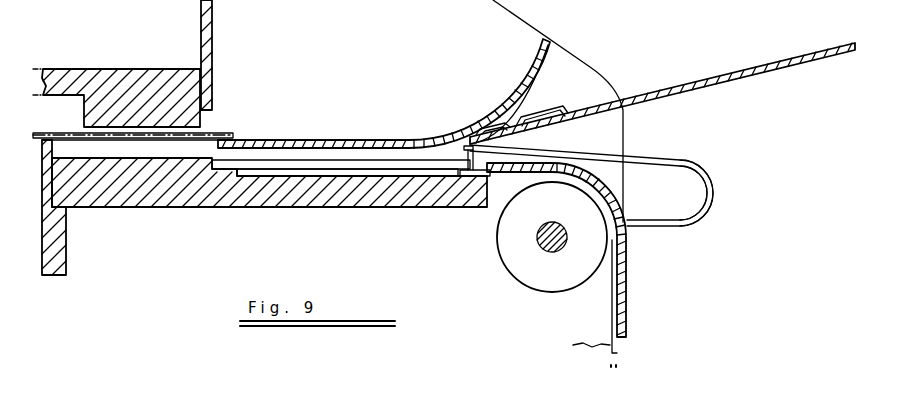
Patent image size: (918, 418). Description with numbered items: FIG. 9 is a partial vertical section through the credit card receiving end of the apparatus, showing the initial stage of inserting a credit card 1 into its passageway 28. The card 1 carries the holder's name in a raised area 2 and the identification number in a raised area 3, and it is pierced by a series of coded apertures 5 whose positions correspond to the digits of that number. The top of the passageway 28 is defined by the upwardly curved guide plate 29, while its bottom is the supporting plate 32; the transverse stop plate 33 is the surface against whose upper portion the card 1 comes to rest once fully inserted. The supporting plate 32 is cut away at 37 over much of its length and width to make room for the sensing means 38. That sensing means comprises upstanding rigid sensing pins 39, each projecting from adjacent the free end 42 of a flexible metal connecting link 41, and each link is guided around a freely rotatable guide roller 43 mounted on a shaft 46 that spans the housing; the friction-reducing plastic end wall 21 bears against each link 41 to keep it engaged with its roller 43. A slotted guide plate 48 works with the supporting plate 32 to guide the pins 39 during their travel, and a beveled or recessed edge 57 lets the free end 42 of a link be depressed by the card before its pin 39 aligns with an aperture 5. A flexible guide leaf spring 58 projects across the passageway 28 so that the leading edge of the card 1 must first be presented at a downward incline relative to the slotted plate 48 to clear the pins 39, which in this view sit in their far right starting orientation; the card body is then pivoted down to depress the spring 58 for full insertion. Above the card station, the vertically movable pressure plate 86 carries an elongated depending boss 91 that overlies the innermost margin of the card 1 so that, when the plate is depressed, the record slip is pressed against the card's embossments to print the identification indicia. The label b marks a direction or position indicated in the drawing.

The credit card 1 is at (743, 63).
The card holder name area 2 is at (510, 117).
The identification number area 3 is at (550, 103).
The coded apertures 5 is at (637, 97).
The end wall 21 is at (617, 258).
The credit card passageway 28 is at (625, 133).
The guide plate 29 is at (538, 55).
The supporting plate 32 is at (153, 190).
The stop plate 33 is at (55, 238).
The cut-away portion 37 is at (342, 175).
The sensing means 38 is at (457, 183).
The sensing members 39 is at (465, 130).
The flexible connecting link 41 is at (610, 357).
The end of connecting link 42 is at (493, 176).
The guide roller 43 is at (527, 224).
The mounting shaft 46 is at (557, 247).
The slotted guide plate 48 is at (362, 166).
The beveled recessed edge 57 is at (463, 203).
The guide leaf spring 58 is at (707, 173).
The pressure plate 86 is at (53, 82).
The depending boss 91 is at (163, 105).
The reference position b is at (222, 128).